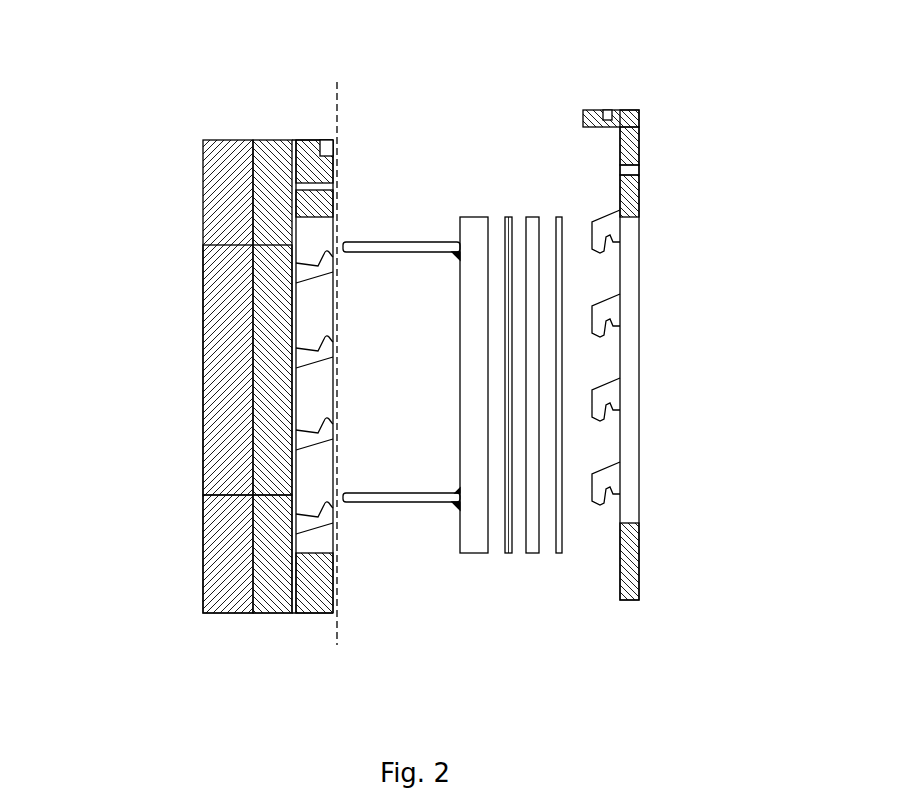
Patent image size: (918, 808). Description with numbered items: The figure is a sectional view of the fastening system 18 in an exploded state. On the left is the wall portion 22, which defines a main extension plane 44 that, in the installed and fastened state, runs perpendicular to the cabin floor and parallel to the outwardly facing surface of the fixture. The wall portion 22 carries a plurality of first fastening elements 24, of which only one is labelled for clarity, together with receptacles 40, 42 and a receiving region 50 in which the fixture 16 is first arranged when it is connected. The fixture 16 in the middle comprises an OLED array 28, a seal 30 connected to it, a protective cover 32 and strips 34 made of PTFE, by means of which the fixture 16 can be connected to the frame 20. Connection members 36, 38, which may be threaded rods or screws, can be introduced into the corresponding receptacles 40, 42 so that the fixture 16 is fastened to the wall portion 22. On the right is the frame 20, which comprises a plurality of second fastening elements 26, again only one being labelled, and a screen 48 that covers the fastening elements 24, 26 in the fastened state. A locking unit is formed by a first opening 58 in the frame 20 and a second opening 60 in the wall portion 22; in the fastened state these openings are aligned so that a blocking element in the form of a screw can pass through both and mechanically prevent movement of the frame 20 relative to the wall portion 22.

The fixture 16 is at (479, 158).
The fastening system 18 is at (454, 106).
The frame 20 is at (699, 499).
The wall portion 22 is at (183, 171).
The first fastening element 24 is at (306, 530).
The second fastening element 26 is at (603, 500).
The OLED array 28 is at (468, 552).
The seal 30 is at (511, 553).
The protective cover 32 is at (534, 553).
The strips 34 is at (559, 553).
The connection member 36 is at (398, 242).
The connection member 38 is at (396, 502).
The receptacle 40 is at (205, 262).
The receptacle 42 is at (205, 505).
The main extension plane 44 is at (333, 122).
The screen 48 is at (641, 141).
The receiving region 50 is at (334, 232).
The first opening 58 is at (641, 170).
The second opening 60 is at (303, 181).